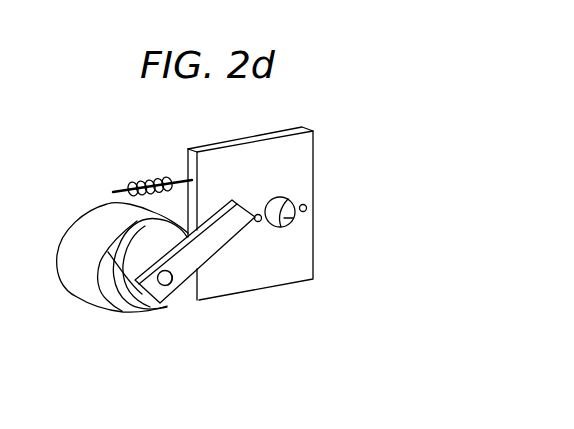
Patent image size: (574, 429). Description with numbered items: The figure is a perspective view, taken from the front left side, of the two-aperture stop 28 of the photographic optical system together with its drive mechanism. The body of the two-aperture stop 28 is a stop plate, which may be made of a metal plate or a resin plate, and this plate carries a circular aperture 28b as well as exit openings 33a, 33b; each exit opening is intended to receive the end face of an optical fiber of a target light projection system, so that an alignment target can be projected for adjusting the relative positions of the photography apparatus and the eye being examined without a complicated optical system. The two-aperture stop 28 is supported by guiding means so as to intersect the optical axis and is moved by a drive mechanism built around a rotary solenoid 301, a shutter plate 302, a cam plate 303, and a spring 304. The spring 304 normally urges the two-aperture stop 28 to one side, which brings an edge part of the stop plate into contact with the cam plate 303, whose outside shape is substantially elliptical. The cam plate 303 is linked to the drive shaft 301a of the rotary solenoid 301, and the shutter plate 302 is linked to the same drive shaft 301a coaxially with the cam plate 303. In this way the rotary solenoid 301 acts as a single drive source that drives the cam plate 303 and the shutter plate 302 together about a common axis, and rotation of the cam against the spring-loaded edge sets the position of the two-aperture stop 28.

The two-aperture stop 28 is at (292, 267).
The circular aperture 28b is at (287, 221).
The exit opening 33a is at (259, 222).
The exit opening 33b is at (306, 206).
The rotary solenoid 301 is at (85, 255).
The drive shaft 301a is at (165, 286).
The shutter plate 302 is at (202, 252).
The cam plate 303 is at (140, 257).
The spring 304 is at (137, 190).